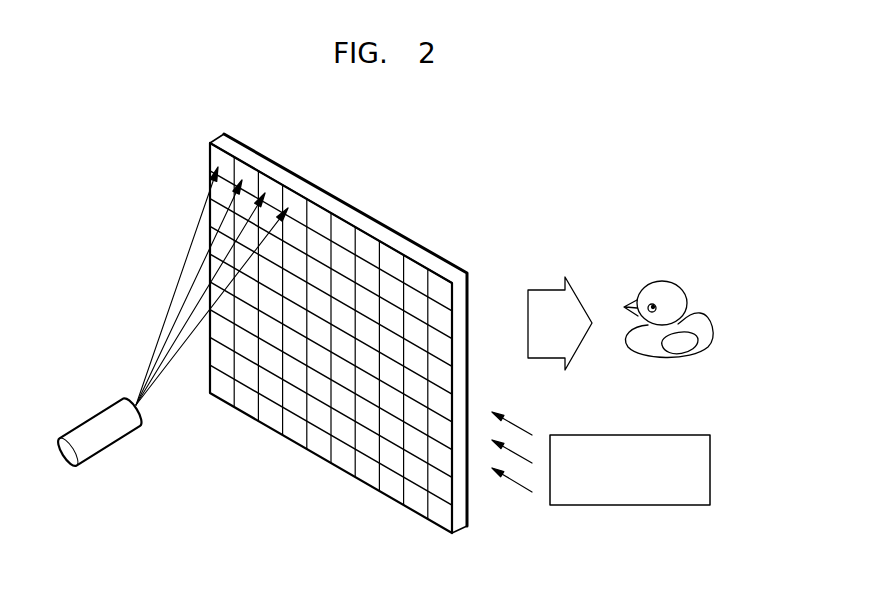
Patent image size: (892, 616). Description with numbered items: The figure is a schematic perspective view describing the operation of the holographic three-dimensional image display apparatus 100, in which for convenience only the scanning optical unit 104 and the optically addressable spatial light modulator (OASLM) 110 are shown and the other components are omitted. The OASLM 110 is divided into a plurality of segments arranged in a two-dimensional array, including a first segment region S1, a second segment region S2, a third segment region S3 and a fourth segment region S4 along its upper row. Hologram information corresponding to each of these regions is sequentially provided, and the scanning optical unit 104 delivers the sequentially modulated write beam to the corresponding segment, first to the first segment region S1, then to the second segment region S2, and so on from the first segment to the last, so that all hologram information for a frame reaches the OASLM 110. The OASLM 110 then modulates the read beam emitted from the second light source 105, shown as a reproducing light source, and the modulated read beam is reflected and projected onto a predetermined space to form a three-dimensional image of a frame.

The holographic 3D image display apparatus 100 is at (513, 162).
The scanning optical unit 104 is at (92, 418).
The second light source 105 is at (632, 435).
The optically addressable spatial light modulator 110 is at (463, 515).
The first segment region S1 is at (223, 158).
The second segment region S2 is at (245, 173).
The third segment region S3 is at (272, 187).
The fourth segment region S4 is at (295, 200).